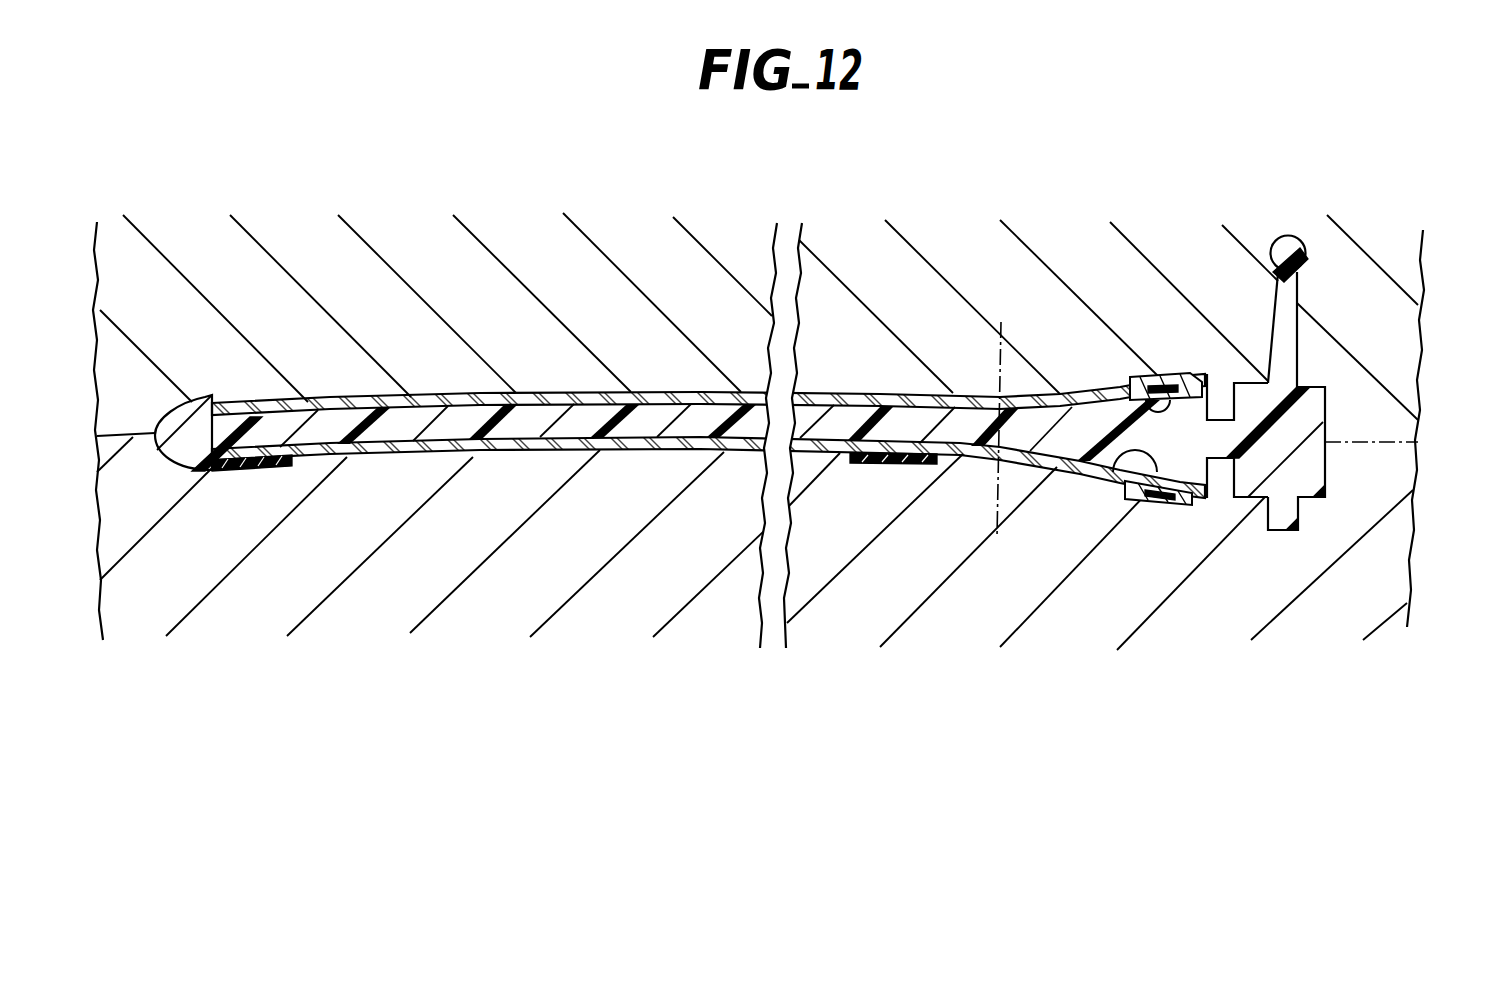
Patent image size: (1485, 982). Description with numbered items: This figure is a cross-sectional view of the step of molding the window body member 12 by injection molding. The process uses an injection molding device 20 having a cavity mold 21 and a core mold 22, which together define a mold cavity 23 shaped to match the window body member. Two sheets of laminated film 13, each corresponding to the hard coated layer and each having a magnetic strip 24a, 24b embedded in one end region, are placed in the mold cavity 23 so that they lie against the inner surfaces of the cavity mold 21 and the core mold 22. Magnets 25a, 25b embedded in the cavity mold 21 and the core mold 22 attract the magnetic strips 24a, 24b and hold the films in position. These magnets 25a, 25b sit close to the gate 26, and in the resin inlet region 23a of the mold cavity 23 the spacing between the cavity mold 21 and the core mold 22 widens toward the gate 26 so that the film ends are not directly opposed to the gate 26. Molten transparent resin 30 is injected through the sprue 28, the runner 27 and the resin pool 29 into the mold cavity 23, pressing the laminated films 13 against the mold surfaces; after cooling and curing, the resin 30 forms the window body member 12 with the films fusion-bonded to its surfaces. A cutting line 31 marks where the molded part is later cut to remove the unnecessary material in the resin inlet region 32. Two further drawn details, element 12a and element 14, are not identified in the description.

The window body member 12 is at (407, 393).
The rounded end cap 12a is at (193, 410).
The laminated film 13 is at (646, 392).
The seal 14 is at (290, 468).
The injection molding device 20 is at (564, 210).
The cavity mold 21 is at (1402, 262).
The core mold 22 is at (1377, 577).
The mold cavity 23 is at (172, 471).
The resin inlet region 23a is at (1210, 383).
The magnetic strip 24a is at (1118, 396).
The magnetic strip 24b is at (1088, 484).
The magnet 25a is at (1163, 388).
The magnet 25b is at (1157, 505).
The gate 26 is at (1210, 458).
The runner 27 is at (1284, 235).
The sprue 28 is at (1277, 330).
The resin pool 29 is at (1330, 468).
The transparent resin 30 is at (722, 398).
The cutting line 31 is at (1001, 322).
The resin inlet region 32 is at (1288, 546).